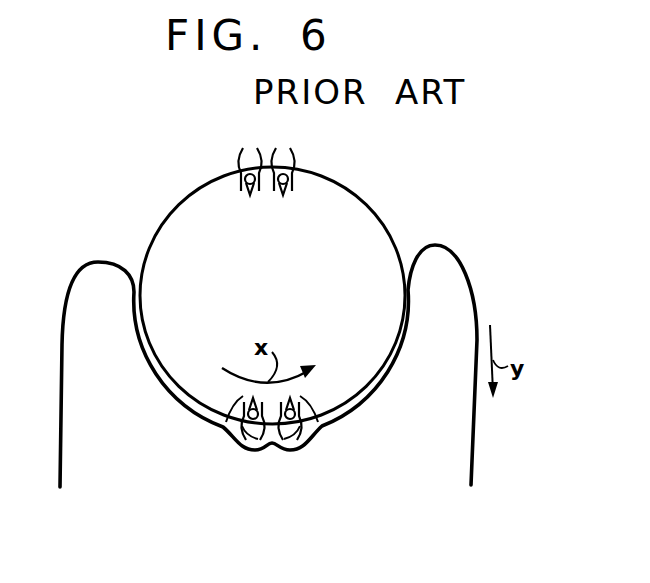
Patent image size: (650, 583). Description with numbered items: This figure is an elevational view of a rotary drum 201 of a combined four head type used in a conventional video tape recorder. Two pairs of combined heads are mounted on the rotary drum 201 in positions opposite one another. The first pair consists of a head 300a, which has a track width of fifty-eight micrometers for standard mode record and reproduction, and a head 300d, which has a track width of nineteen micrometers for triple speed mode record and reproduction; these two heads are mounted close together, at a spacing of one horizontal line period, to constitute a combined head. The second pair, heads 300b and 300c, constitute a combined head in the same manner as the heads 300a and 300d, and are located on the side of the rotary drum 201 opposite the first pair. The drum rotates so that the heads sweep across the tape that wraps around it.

The rotary drum 201 is at (350, 222).
The head 300a is at (290, 184).
The head 300b is at (218, 432).
The head 300c is at (312, 432).
The head 300d is at (250, 184).